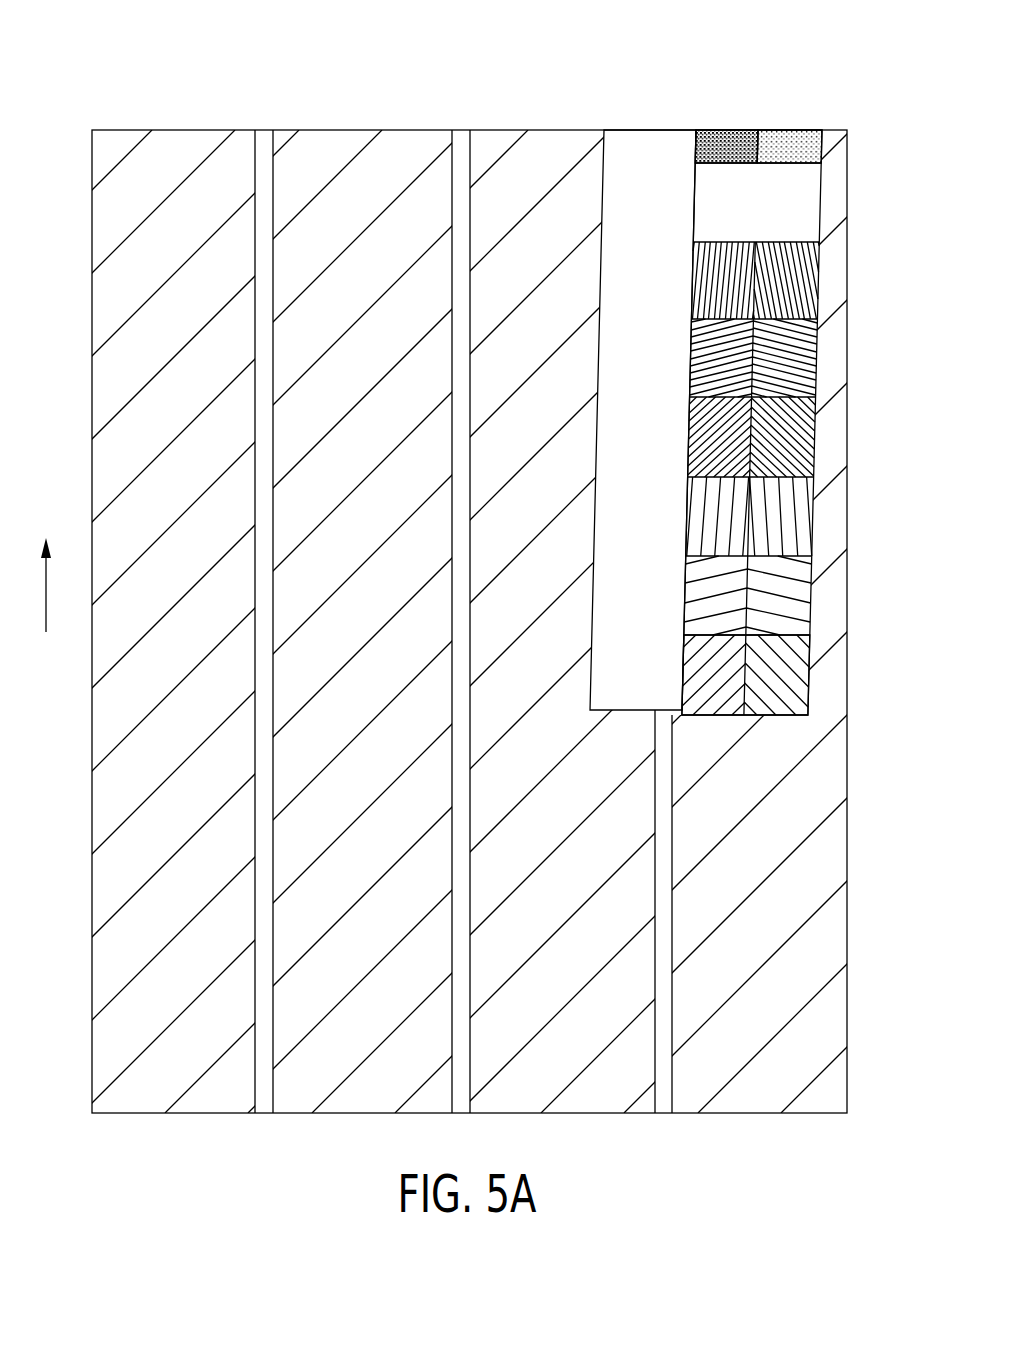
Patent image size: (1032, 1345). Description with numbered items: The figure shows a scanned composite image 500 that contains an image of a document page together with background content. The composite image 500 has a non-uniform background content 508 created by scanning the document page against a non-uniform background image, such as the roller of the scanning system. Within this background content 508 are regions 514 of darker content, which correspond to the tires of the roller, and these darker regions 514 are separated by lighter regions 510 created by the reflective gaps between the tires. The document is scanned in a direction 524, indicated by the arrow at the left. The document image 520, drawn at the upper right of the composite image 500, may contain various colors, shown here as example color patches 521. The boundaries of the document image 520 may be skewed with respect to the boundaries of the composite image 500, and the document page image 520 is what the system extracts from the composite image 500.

The composite image 500 is at (757, 438).
The background content 508 is at (178, 118).
The lighter regions 510 is at (262, 138).
The regions of darker content 514 is at (92, 240).
The document page image 520 is at (783, 717).
The color patches 521 is at (795, 275).
The scanning direction 524 is at (46, 593).